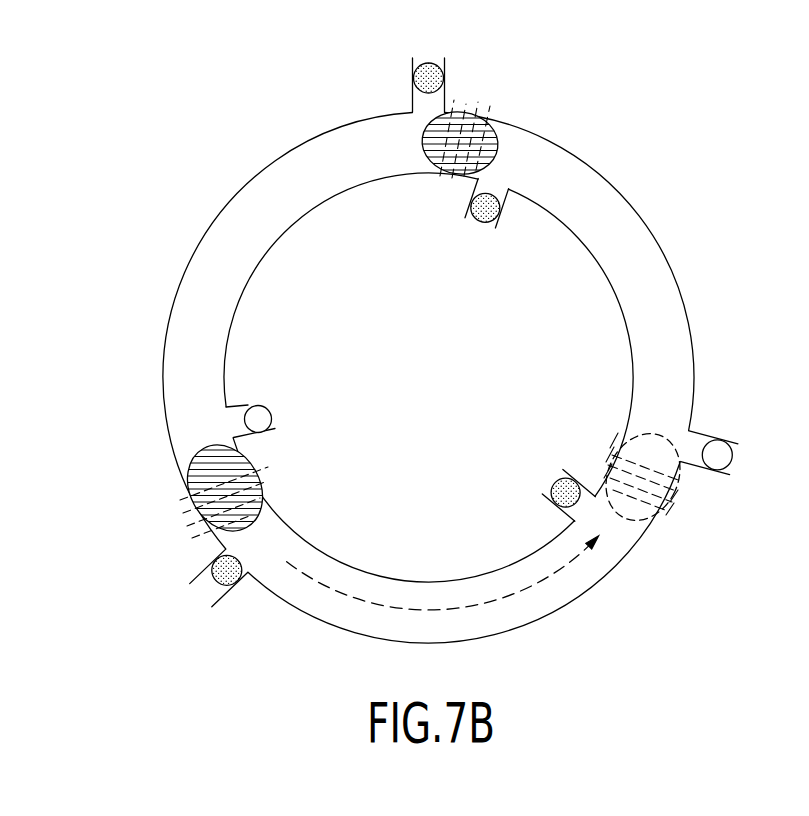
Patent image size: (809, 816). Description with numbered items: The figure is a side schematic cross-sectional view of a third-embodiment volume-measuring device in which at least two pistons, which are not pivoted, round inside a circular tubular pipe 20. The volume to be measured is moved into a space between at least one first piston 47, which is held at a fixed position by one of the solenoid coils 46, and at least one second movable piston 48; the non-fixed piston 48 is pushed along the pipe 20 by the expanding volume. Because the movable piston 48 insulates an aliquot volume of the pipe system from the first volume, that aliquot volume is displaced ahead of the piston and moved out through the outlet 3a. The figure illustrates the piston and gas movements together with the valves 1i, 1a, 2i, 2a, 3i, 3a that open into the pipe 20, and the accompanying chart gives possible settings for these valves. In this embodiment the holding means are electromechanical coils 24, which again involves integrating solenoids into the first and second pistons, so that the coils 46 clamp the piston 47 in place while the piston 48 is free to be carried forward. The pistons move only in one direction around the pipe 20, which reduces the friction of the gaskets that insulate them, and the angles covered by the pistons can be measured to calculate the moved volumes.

The tubular pipe 20 is at (657, 237).
The electromechanical coils 24 is at (466, 179).
The solenoid coils 46 is at (483, 120).
The first piston 47 is at (488, 145).
The second movable piston 48 is at (248, 513).
The valve 1a is at (429, 69).
The valve 1i is at (487, 218).
The valve 2a is at (213, 587).
The valve 2i is at (270, 418).
The outlet valve 3a is at (726, 457).
The valve 3i is at (558, 489).